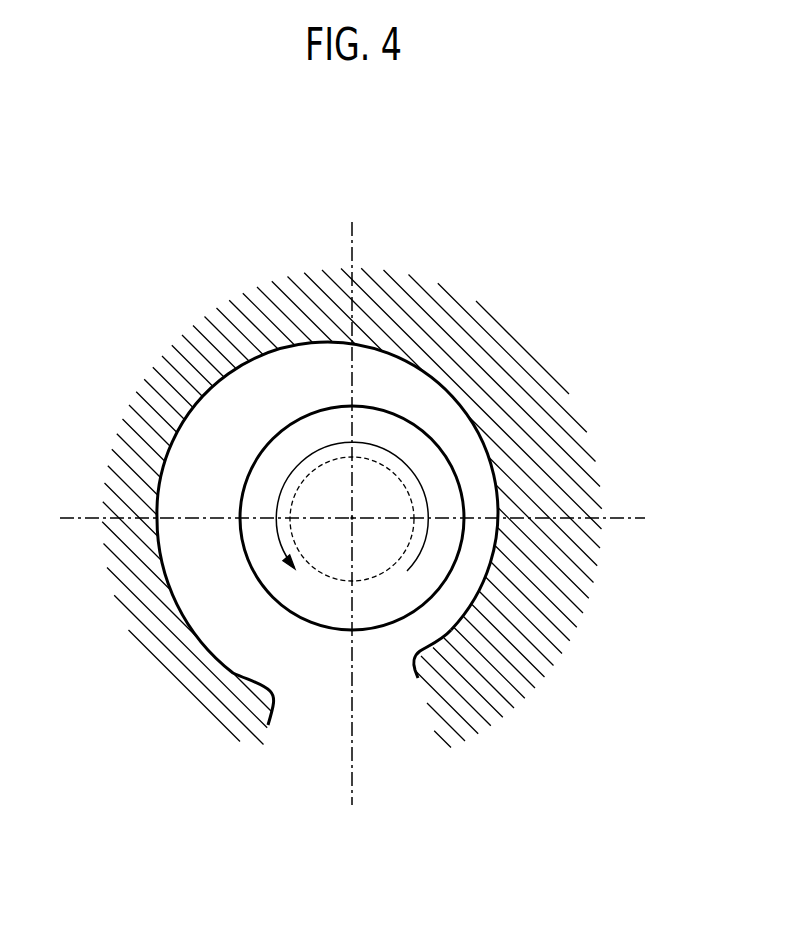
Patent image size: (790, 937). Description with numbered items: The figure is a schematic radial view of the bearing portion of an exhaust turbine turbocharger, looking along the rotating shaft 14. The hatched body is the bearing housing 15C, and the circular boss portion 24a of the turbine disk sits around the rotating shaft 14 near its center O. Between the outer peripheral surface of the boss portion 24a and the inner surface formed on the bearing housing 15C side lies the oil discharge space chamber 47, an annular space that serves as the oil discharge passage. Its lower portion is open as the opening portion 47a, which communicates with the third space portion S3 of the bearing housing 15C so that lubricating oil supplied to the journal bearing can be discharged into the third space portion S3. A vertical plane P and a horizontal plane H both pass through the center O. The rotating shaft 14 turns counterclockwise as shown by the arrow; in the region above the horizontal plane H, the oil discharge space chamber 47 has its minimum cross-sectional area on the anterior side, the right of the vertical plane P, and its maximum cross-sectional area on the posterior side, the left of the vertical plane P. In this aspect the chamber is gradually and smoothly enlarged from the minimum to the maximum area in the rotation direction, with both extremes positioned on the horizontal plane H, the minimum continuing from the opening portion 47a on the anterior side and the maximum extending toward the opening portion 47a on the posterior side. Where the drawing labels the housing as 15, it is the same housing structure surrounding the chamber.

The rotating shaft 14 is at (378, 577).
The housing 15 is at (500, 354).
The bearing housing 15C is at (445, 302).
The boss portion 24a is at (453, 467).
The oil discharge space chamber 47 is at (447, 413).
The opening portion 47a is at (415, 662).
The vertical plane P is at (353, 244).
The horizontal plane H is at (628, 514).
The center O is at (352, 518).
The third space portion S3 is at (328, 757).